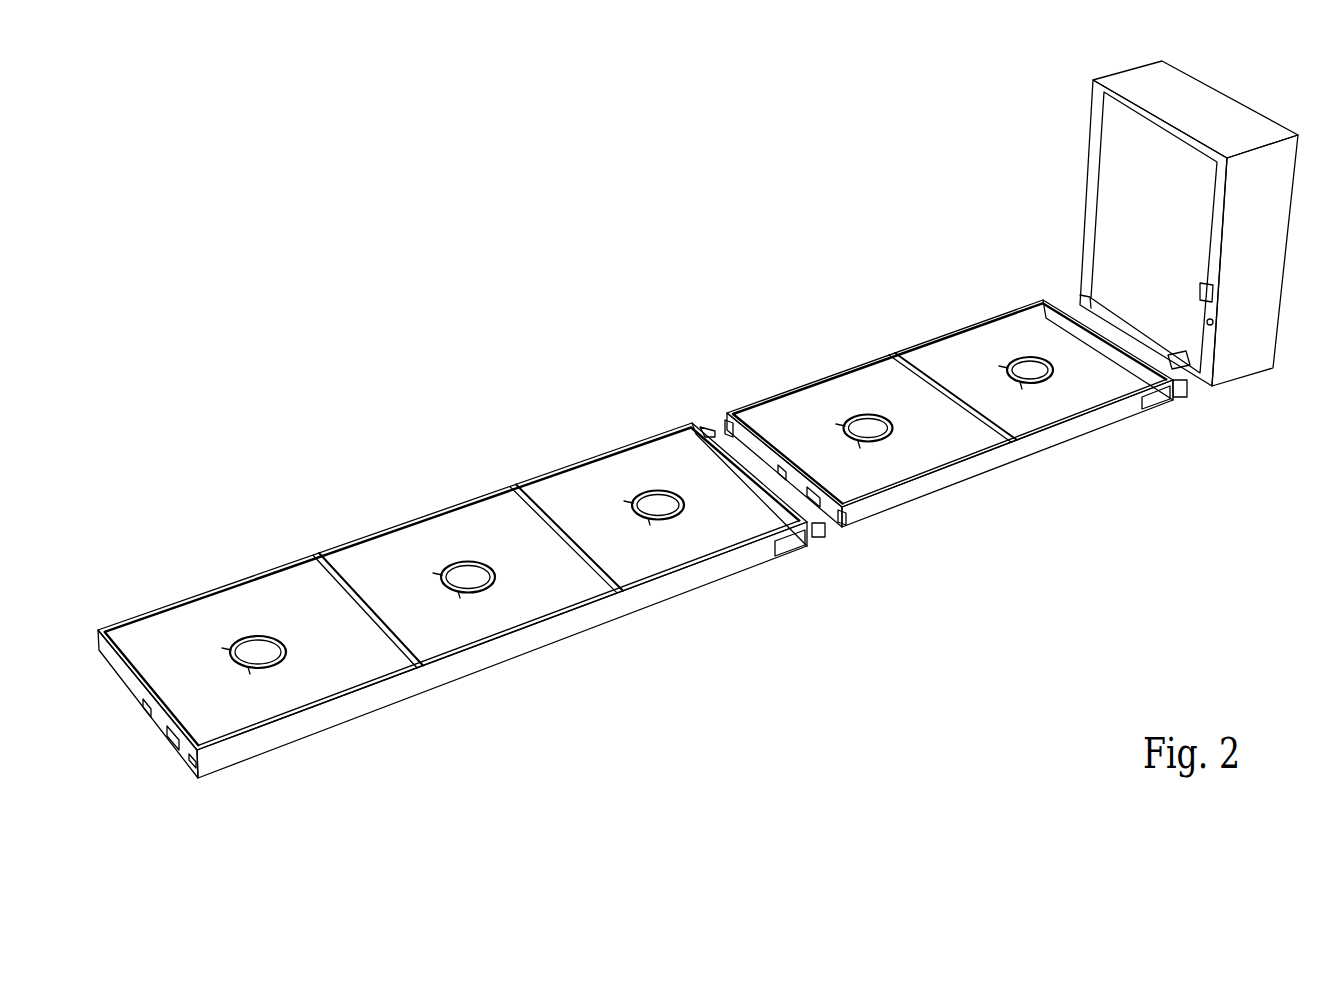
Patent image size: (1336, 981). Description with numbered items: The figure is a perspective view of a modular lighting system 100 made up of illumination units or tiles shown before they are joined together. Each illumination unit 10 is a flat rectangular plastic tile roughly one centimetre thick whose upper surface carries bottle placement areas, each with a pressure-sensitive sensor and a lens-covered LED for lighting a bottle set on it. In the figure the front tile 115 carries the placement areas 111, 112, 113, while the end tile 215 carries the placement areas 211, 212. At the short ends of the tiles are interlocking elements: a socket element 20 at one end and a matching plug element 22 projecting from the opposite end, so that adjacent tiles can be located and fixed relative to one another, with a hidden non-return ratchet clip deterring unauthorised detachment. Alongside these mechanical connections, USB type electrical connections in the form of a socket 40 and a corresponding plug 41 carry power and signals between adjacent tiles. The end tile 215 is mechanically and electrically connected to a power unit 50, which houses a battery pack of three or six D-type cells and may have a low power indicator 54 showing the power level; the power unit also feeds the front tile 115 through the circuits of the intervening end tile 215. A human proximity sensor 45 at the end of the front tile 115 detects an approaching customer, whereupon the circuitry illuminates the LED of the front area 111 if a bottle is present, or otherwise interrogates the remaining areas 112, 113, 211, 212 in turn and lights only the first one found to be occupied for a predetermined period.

The modular lighting system 100 is at (247, 482).
The illumination unit 10 is at (283, 769).
The socket element 20 is at (723, 417).
The plug element 22 is at (703, 424).
The human proximity sensor 45 is at (143, 706).
The front area 111 is at (238, 610).
The area 112 is at (445, 540).
The area 113 is at (630, 472).
The tile 115 is at (518, 652).
The area 211 is at (842, 392).
The area 212 is at (1002, 340).
The end tile 215 is at (1052, 445).
The power unit 50 is at (1072, 182).
The low power indicator 54 is at (1222, 321).
The socket 40 is at (1186, 364).
The plug 41 is at (1183, 388).